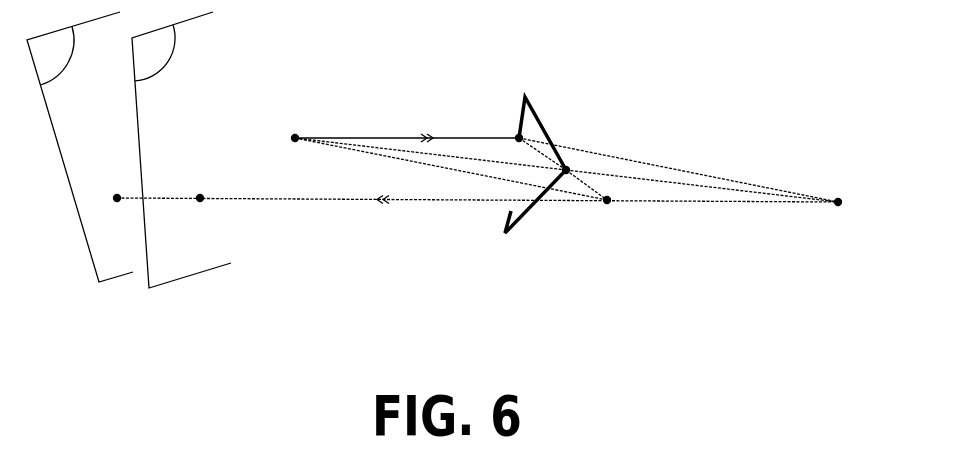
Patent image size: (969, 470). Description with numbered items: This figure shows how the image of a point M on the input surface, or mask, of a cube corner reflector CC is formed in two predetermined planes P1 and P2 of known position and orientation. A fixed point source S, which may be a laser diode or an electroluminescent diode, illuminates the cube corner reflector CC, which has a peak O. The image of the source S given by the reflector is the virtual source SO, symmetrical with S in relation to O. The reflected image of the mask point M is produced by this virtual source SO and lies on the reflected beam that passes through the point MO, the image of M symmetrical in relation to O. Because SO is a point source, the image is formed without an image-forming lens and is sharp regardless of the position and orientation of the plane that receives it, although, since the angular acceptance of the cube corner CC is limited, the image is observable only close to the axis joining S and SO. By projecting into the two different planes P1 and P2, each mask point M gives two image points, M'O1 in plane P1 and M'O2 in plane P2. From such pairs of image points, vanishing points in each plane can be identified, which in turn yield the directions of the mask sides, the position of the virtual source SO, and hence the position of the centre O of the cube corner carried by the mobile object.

The first projection plane P1 is at (181, 150).
The second projection plane P2 is at (80, 147).
The point source S is at (296, 129).
The point of the mask M is at (506, 126).
The peak of the cube corner O is at (573, 162).
The symmetrical image of point M MO is at (612, 217).
The virtual source SO is at (838, 218).
The cube corner reflector CC is at (520, 220).
The image point in first plane M'O1 is at (204, 215).
The image point in second plane M'O2 is at (114, 215).